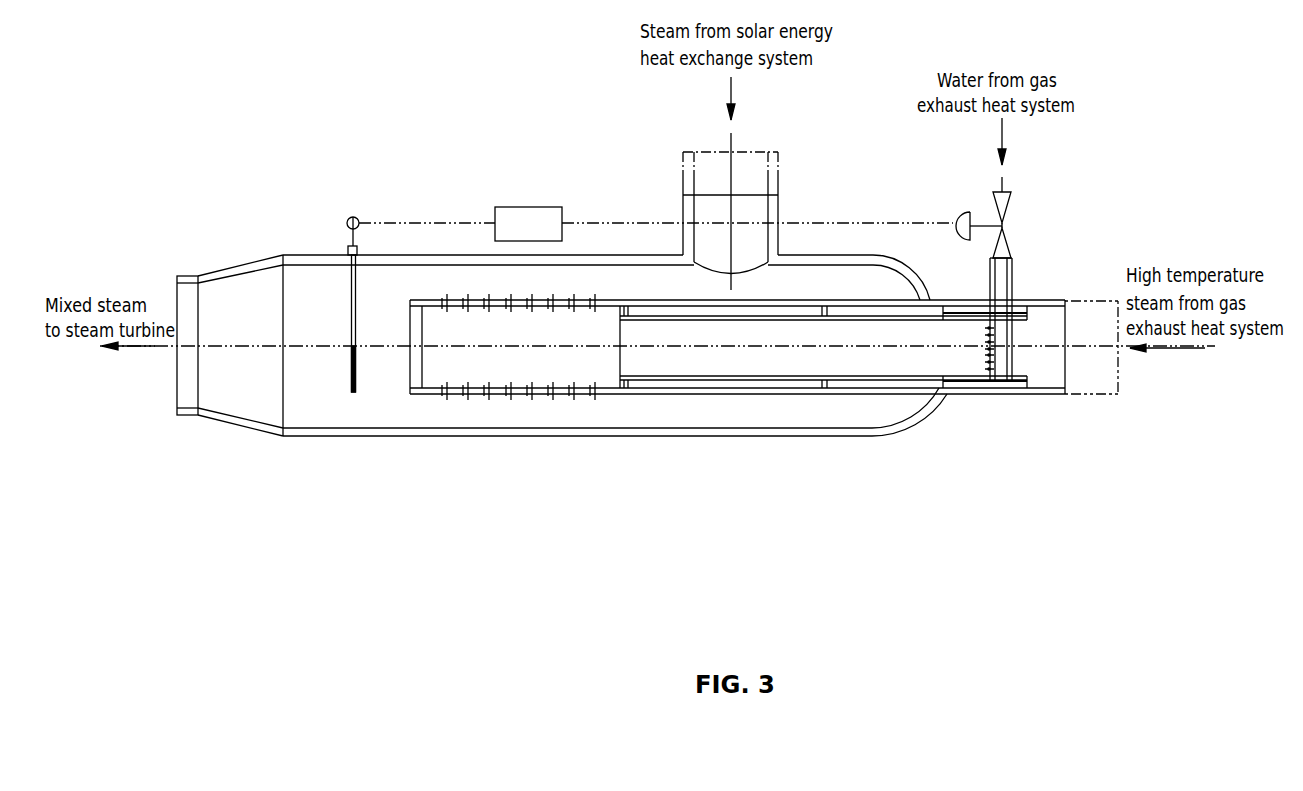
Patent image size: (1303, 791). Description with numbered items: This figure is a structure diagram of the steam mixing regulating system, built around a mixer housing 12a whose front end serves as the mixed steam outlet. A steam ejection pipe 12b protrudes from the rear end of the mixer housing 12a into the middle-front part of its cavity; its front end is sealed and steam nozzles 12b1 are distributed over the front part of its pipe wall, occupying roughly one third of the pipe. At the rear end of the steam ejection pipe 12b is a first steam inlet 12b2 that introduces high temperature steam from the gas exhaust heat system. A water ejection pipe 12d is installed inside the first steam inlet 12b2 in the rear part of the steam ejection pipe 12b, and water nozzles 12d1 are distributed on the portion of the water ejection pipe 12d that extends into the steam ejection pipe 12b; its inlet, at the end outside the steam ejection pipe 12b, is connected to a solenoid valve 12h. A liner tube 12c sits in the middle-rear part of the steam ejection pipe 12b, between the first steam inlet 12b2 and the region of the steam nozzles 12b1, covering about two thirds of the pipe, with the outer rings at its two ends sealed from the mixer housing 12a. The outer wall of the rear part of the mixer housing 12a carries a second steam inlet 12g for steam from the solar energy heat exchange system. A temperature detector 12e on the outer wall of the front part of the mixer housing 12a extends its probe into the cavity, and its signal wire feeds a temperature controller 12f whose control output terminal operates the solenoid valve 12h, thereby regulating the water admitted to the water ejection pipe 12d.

The mixer housing 12a is at (773, 433).
The steam ejection pipe 12b is at (713, 392).
The steam nozzles 12b1 is at (469, 393).
The first steam inlet 12b2 is at (1045, 394).
The liner tube 12c is at (942, 393).
The water ejection pipe 12d is at (1003, 388).
The water nozzles 12d1 is at (988, 342).
The temperature detector 12e is at (350, 388).
The temperature controller 12f is at (503, 215).
The second steam inlet 12g is at (707, 188).
The solenoid valve 12h is at (966, 226).